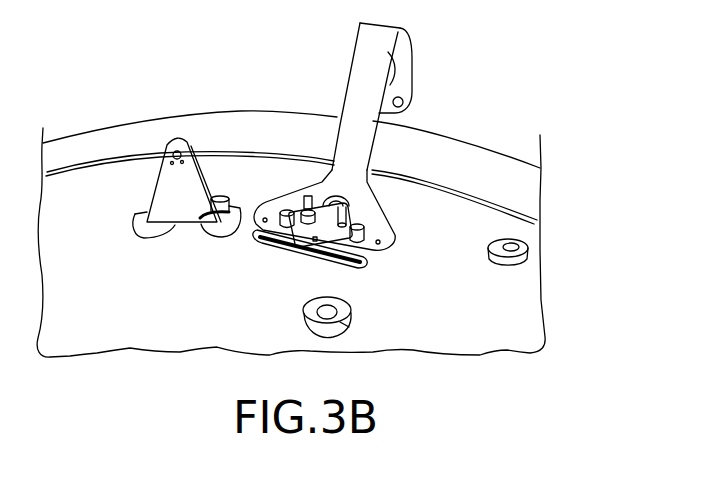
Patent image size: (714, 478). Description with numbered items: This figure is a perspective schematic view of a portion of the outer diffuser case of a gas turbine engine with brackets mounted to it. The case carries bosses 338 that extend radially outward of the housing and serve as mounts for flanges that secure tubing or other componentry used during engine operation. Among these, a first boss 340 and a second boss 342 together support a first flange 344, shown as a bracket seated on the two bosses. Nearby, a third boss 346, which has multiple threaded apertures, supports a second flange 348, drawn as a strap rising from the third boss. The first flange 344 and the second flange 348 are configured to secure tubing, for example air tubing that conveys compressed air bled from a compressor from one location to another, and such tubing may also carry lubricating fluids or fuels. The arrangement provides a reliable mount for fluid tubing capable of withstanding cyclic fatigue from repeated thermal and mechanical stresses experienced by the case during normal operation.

The boss 338 is at (530, 249).
The first boss 340 is at (143, 232).
The second boss 342 is at (217, 240).
The first flange 344 is at (173, 180).
The third boss 346 is at (362, 256).
The second flange 348 is at (357, 92).